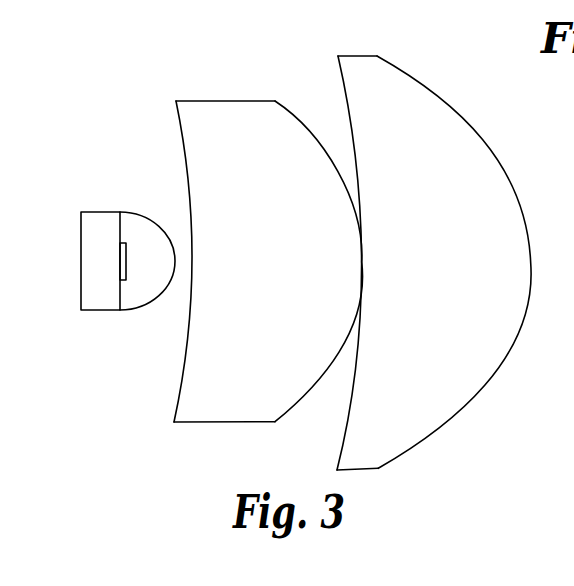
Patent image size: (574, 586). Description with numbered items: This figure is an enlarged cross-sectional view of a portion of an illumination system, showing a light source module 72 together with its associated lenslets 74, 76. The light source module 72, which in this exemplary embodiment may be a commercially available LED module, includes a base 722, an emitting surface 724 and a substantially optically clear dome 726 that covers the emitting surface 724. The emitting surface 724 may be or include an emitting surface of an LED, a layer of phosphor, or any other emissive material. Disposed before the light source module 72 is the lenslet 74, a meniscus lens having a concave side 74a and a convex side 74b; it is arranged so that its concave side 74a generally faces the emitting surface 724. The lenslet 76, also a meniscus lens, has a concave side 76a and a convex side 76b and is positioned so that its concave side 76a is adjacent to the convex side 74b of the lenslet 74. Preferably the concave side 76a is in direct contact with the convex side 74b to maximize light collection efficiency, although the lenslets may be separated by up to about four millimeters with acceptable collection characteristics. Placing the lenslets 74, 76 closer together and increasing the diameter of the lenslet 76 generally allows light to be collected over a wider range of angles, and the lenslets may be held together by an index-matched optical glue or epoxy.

The light source module 72 is at (94, 239).
The base 722 is at (92, 285).
The emitting surface 724 is at (128, 274).
The dome 726 is at (153, 237).
The lenslet 74 is at (241, 230).
The concave side 74a is at (176, 108).
The convex side 74b is at (301, 122).
The lenslet 76 is at (404, 242).
The concave side 76a is at (343, 441).
The convex side 76b is at (470, 122).